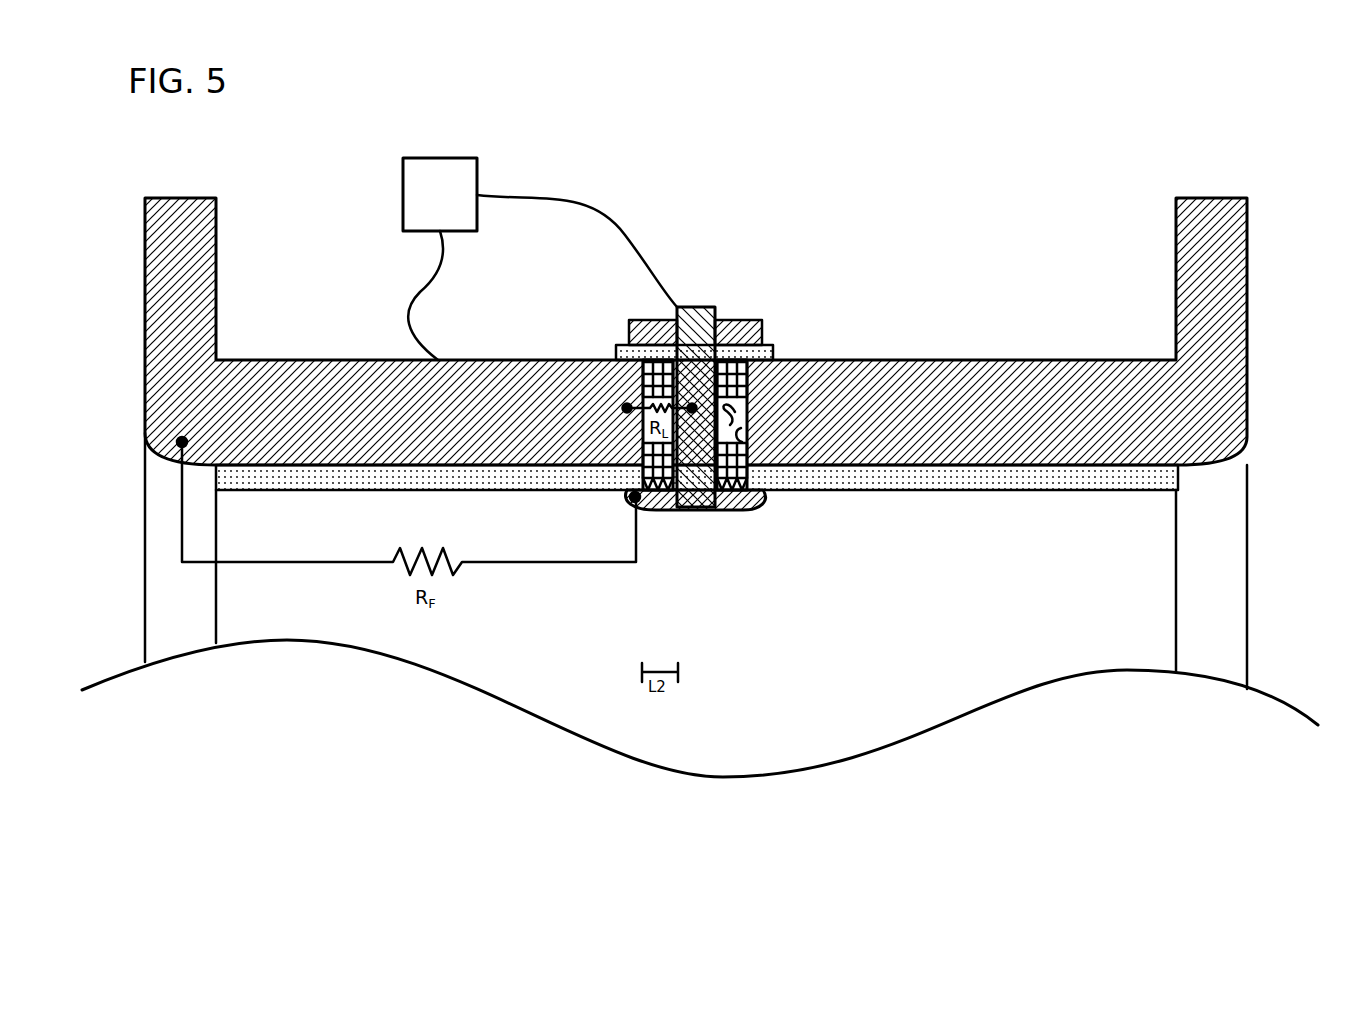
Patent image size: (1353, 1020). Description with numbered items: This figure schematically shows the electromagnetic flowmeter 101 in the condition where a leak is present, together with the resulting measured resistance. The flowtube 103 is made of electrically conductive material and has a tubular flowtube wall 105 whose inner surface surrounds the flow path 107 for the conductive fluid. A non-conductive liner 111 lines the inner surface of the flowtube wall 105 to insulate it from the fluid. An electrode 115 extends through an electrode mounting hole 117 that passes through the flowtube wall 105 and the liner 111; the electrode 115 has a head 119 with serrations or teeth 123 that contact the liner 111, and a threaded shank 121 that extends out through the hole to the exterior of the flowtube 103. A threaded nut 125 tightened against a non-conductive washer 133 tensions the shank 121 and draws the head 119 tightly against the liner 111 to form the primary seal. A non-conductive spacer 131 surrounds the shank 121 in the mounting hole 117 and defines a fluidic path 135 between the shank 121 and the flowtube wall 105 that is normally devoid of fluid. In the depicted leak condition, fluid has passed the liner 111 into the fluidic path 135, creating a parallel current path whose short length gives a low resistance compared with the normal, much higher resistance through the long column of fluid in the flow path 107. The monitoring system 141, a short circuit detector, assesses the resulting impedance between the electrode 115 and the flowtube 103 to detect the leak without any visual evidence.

The electromagnetic flowmeter 101 is at (1032, 168).
The flowtube 103 is at (915, 360).
The flowtube wall 105 is at (325, 417).
The flow path 107 is at (800, 677).
The non-conductive liner 111 is at (886, 490).
The electrode 115 is at (688, 307).
The electrode mounting hole 117 is at (742, 442).
The head 119 is at (728, 502).
The shank 121 is at (692, 358).
The serrations or teeth 123 is at (665, 485).
The threaded nut 125 is at (740, 330).
The non-conductive spacer 131 is at (650, 375).
The non-conductive washer 133 is at (770, 355).
The fluidic path 135 is at (735, 412).
The monitoring system 141 is at (540, 259).